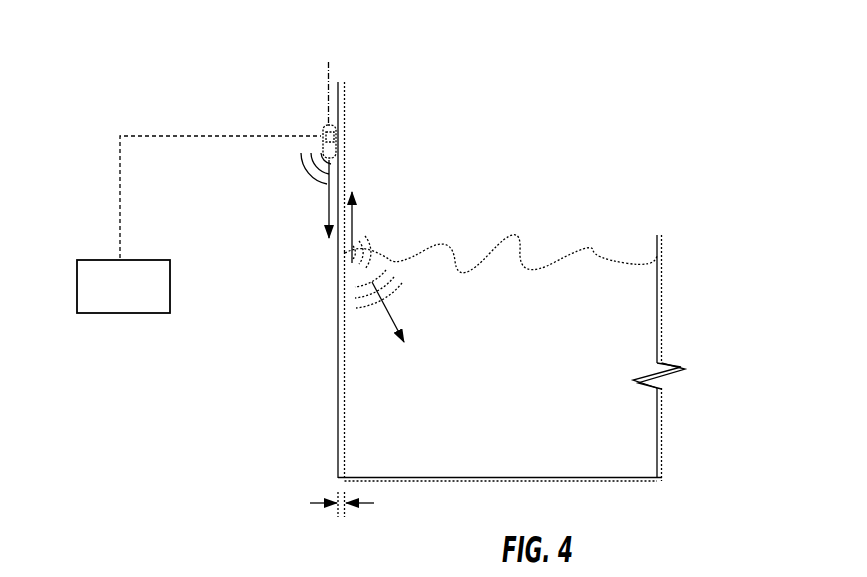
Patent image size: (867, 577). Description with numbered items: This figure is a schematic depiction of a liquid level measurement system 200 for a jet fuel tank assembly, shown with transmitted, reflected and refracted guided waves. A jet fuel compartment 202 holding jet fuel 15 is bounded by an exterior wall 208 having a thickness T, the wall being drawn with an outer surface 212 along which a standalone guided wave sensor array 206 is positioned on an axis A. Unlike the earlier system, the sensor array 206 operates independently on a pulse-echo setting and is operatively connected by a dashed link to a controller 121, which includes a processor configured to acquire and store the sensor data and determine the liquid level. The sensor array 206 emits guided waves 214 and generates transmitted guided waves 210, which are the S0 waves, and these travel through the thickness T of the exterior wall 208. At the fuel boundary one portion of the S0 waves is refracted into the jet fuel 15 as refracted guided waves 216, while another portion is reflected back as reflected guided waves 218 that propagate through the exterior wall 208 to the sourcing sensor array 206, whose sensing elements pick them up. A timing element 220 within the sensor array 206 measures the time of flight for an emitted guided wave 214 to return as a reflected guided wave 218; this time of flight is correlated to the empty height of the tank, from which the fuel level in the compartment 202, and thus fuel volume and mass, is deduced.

The liquid level measurement system 200 is at (664, 132).
The jet fuel compartment 202 is at (668, 459).
The exterior wall 208 is at (661, 328).
The outer surface of wall 212 is at (346, 110).
The guided wave sensor array 206 is at (321, 132).
The timing element 220 is at (340, 137).
The emitted guided wave 214 is at (312, 165).
The transmitted guided wave 210 is at (348, 248).
The reflected guided wave 218 is at (337, 252).
The refracted guided wave 216 is at (380, 305).
The jet fuel 15 is at (517, 364).
The controller 121 is at (199, 224).
The sensor axis A is at (329, 80).
The S0 waves S0 is at (355, 211).
The thickness T is at (351, 506).